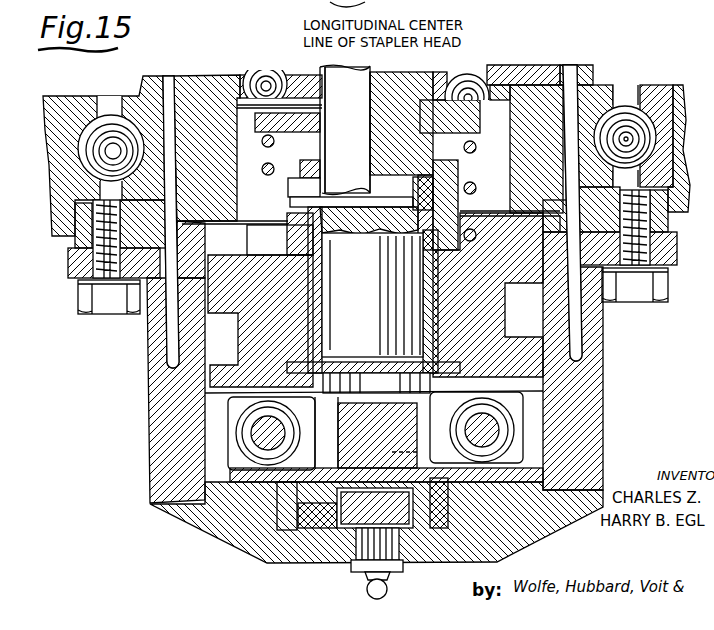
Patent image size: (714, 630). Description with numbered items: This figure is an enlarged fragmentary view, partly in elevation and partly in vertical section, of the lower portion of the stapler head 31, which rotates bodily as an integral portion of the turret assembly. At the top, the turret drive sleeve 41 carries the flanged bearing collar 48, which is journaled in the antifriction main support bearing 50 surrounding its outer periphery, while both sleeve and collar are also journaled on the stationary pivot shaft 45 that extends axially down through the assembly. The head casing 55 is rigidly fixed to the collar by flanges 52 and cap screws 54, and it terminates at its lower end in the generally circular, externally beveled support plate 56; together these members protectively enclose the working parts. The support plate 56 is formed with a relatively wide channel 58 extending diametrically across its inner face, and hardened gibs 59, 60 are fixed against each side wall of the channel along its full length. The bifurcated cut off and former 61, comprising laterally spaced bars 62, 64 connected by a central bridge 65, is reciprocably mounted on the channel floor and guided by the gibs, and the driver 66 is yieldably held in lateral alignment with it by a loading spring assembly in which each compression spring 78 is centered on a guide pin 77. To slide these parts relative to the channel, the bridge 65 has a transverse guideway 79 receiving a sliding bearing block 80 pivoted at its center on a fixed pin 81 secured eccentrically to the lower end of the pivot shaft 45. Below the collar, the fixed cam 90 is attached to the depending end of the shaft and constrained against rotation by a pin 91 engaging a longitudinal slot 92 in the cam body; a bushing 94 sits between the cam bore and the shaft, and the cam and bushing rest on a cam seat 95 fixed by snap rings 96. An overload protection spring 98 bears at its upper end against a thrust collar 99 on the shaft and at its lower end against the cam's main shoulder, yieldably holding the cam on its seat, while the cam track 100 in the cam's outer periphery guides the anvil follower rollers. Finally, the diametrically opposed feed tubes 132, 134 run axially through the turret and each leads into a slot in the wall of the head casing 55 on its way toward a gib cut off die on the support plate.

The stapler head 31 is at (147, 463).
The turret drive sleeve 41 is at (600, 72).
The pivot shaft 45 is at (330, 82).
The flanged bearing collar 48 is at (518, 170).
The main support bearing 50 is at (664, 85).
The flanges 52 is at (68, 262).
The cap screws 54 is at (85, 305).
The head casing 55 is at (603, 410).
The support plate 56 is at (202, 535).
The channel 58 is at (288, 527).
The gib 59 is at (463, 527).
The gib 60 is at (292, 528).
The cut off and former 61 is at (410, 530).
The bar 62 is at (437, 533).
The bar 64 is at (310, 527).
The bridge 65 is at (253, 478).
The driver 66 is at (348, 527).
The guide pin 77 is at (255, 430).
The compression springs 78 is at (242, 447).
The transverse guideway 79 is at (330, 470).
The bearing block 80 is at (405, 411).
The fixed pin 81 is at (405, 445).
The fixed cam 90 is at (226, 263).
The pin 91 is at (288, 197).
The longitudinal slot 92 is at (292, 214).
The bushing 94 is at (300, 238).
The cam seat 95 is at (308, 395).
The snap rings 96 is at (310, 383).
The overload protection spring 98 is at (263, 172).
The thrust collar 99 is at (252, 132).
The cam track 100 is at (218, 364).
The feed tube 132 is at (572, 74).
The feed tube 134 is at (166, 84).